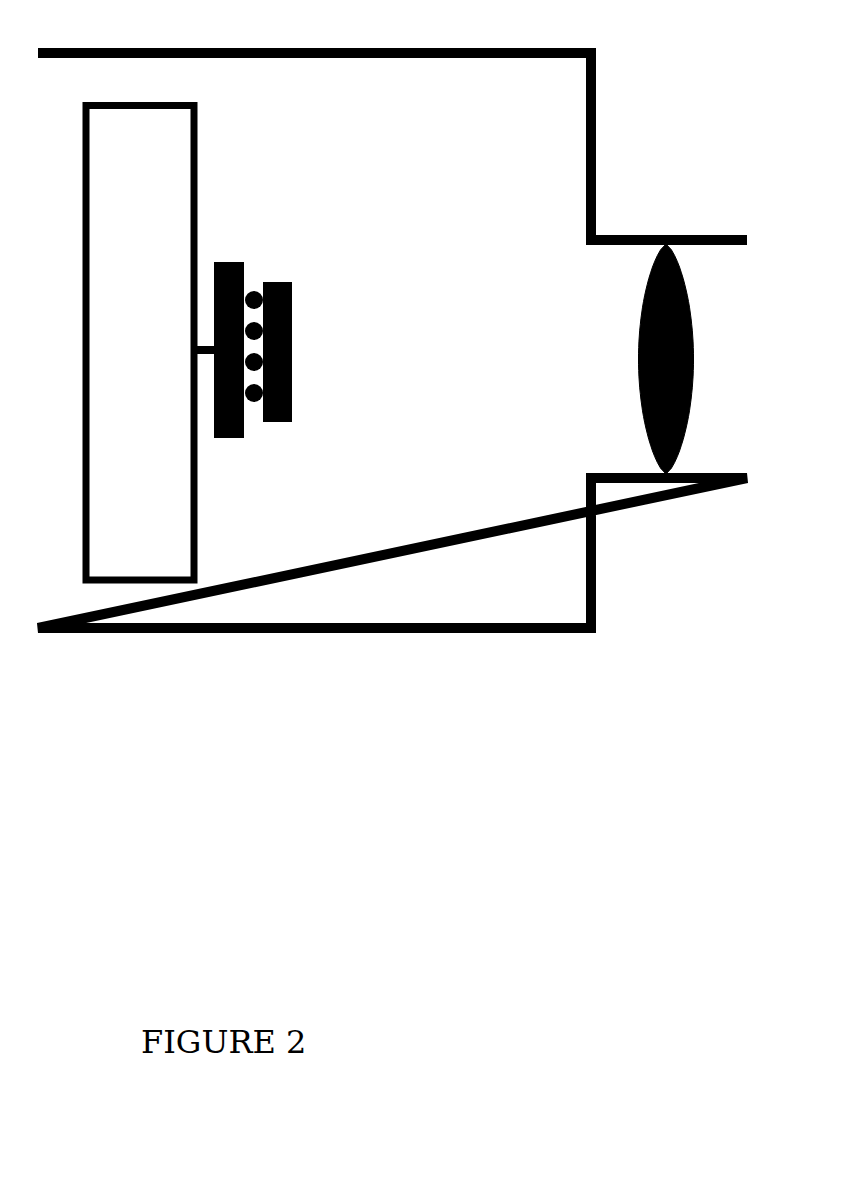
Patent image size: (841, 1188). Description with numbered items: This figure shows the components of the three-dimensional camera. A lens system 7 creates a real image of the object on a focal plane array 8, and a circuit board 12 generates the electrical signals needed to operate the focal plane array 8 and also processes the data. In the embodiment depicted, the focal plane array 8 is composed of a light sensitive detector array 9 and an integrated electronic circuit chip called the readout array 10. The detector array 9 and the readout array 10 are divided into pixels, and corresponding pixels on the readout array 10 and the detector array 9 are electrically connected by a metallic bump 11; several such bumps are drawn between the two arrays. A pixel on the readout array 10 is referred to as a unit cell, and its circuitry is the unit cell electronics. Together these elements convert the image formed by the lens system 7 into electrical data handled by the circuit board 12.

The lens system 7 is at (626, 309).
The focal plane array 8 is at (324, 504).
The light sensitive detector array 9 is at (305, 315).
The readout array 10 is at (234, 240).
The metallic bump 11 is at (255, 424).
The circuit board 12 is at (179, 174).